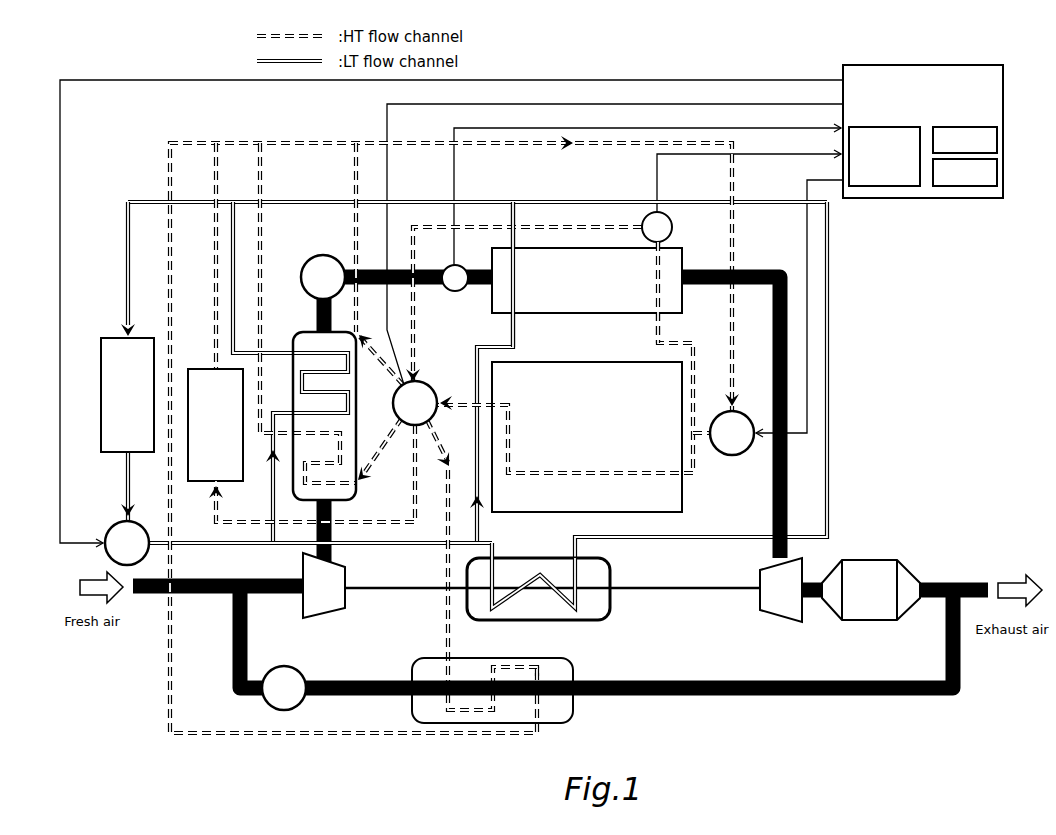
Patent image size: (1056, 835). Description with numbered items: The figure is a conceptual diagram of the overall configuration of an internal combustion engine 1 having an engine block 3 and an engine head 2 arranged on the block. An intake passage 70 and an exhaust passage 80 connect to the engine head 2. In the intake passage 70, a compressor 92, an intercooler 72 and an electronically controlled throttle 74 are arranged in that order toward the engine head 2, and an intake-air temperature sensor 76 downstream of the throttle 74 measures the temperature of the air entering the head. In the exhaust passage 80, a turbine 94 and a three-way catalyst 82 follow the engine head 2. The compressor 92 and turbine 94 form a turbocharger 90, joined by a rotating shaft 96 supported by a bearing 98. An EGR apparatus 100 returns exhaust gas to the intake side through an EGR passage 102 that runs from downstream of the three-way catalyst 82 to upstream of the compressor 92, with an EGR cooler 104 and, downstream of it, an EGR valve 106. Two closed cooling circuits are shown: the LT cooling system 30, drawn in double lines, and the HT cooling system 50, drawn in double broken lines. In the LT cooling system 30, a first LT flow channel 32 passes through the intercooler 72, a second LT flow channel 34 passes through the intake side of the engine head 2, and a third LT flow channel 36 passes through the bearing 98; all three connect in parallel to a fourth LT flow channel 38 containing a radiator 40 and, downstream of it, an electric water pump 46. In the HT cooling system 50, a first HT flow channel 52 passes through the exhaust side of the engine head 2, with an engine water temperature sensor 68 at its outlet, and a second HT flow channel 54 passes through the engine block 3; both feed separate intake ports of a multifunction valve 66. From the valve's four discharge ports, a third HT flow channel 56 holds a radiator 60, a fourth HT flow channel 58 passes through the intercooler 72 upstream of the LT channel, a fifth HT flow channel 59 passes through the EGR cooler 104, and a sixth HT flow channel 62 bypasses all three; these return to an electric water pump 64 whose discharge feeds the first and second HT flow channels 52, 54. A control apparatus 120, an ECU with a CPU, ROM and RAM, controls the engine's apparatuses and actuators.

The internal combustion engine 1 is at (637, 364).
The engine head 2 is at (551, 315).
The engine block 3 is at (612, 362).
The LT cooling system 30 is at (108, 277).
The first LT flow channel 32 is at (273, 506).
The second LT flow channel 34 is at (490, 347).
The third LT flow channel 36 is at (692, 537).
The fourth LT flow channel 38 is at (152, 202).
The radiator 40 is at (100, 340).
The electric water pump 46 is at (114, 527).
The HT cooling system 50 is at (163, 293).
The first HT flow channel 52 is at (669, 342).
The second HT flow channel 54 is at (460, 400).
The third HT flow channel 56 is at (390, 521).
The fourth HT flow channel 58 is at (381, 440).
The fifth HT flow channel 59 is at (445, 563).
The radiator 60 is at (198, 368).
The sixth HT flow channel 62 is at (353, 245).
The electric water pump 64 is at (736, 456).
The multifunction valve 66 is at (392, 397).
The engine water temperature sensor 68 is at (674, 226).
The intake passage 70 is at (517, 602).
The intercooler 72 is at (298, 332).
The electronically controlled throttle 74 is at (306, 260).
The intake-air temperature sensor 76 is at (463, 266).
The exhaust passage 80 is at (772, 520).
The three-way catalyst 82 is at (863, 559).
The turbocharger 90 is at (552, 602).
The compressor 92 is at (334, 620).
The turbine 94 is at (774, 615).
The rotating shaft 96 is at (410, 591).
The bearing 98 is at (592, 622).
The EGR apparatus 100 is at (607, 661).
The EGR passage 102 is at (708, 681).
The EGR cooler 104 is at (495, 658).
The EGR valve 106 is at (284, 666).
The control apparatus 120 is at (917, 65).